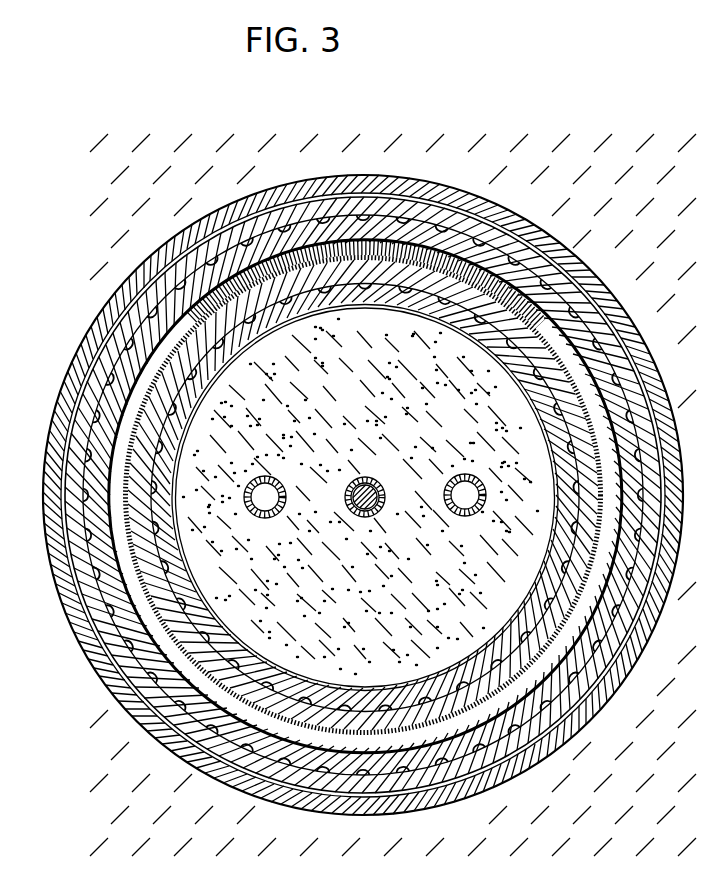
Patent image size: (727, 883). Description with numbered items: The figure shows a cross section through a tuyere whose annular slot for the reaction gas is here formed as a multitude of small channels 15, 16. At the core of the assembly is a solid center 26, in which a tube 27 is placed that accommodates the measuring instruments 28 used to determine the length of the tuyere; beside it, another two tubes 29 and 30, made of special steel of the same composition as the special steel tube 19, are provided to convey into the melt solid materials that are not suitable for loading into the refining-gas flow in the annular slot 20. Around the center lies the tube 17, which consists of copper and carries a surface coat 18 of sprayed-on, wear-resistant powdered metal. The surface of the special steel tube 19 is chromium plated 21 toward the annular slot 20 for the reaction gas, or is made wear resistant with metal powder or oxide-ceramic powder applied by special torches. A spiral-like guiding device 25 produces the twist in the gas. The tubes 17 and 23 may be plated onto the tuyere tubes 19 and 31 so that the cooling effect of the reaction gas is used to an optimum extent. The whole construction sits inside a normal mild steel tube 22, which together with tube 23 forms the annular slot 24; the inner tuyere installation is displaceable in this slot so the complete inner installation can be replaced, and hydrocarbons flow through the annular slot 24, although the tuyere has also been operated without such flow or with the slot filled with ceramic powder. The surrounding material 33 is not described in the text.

The small channel 15 is at (248, 755).
The small channel 16 is at (210, 687).
The tube 17 is at (320, 718).
The surface coat 18 is at (176, 336).
The special steel tube 19 is at (465, 748).
The annular slot 20 is at (422, 745).
The chromium plating 21 is at (140, 325).
The mild steel tube 22 is at (572, 732).
The tube 23 is at (590, 670).
The annular slot 24 is at (508, 763).
The spiral-like guiding device 25 is at (271, 262).
The solid center 26 is at (483, 357).
The tube 27 is at (356, 512).
The measuring instruments 28 is at (378, 512).
The tube 29 is at (470, 483).
The tube 30 is at (263, 520).
The tuyere tube 31 is at (134, 727).
The surrounding ground 33 is at (604, 143).